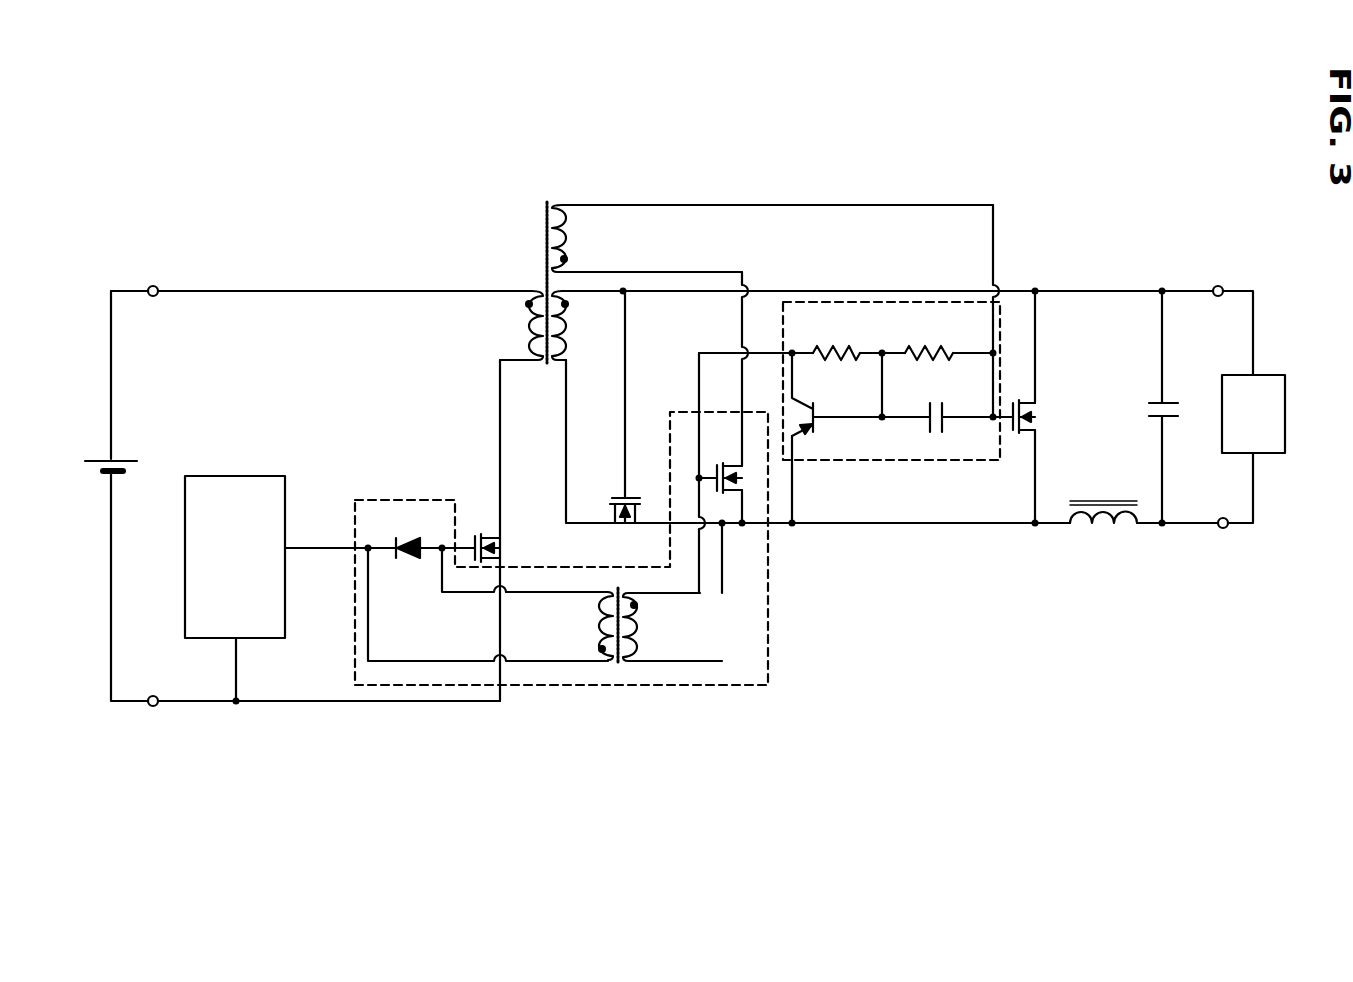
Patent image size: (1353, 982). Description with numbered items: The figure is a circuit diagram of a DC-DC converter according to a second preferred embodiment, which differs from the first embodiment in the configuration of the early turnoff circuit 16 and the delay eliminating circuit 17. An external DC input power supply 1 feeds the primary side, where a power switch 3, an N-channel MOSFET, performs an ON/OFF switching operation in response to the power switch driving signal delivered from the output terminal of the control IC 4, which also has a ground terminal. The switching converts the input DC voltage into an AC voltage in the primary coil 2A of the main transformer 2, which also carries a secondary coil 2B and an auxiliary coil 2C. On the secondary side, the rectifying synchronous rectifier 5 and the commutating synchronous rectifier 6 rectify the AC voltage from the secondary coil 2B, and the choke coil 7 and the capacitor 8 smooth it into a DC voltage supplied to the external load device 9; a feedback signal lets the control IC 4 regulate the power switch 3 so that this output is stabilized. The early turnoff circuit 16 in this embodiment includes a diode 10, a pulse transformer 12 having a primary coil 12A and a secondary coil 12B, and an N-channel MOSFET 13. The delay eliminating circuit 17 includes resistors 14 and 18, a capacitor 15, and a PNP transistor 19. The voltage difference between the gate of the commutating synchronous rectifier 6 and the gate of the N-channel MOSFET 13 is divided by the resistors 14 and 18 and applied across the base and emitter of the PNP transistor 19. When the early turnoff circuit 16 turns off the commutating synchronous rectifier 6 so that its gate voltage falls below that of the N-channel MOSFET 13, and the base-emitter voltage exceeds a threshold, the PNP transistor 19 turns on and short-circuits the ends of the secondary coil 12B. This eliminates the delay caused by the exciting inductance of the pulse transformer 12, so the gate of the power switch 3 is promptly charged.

The DC input power supply 1 is at (103, 460).
The main transformer 2 is at (546, 203).
The primary coil 2A is at (527, 326).
The secondary coil 2B is at (568, 331).
The auxiliary coil 2C is at (566, 236).
The power switch 3 is at (486, 541).
The control IC 4 is at (222, 476).
The rectifying synchronous rectifier 5 is at (619, 497).
The commutating synchronous rectifier 6 is at (1040, 421).
The choke coil 7 is at (1090, 501).
The capacitor 8 is at (1150, 403).
The load device 9 is at (1275, 375).
The diode 10 is at (404, 537).
The pulse transformer 12 is at (617, 588).
The primary coil 12A is at (603, 630).
The secondary coil 12B is at (637, 631).
The N-channel MOSFET 13 is at (723, 459).
The resistor 14 is at (936, 350).
The capacitor 15 is at (955, 404).
The early turnoff circuit 16 is at (380, 500).
The delay eliminating circuit 17 is at (890, 460).
The resistor 18 is at (838, 350).
The PNP transistor 19 is at (815, 412).